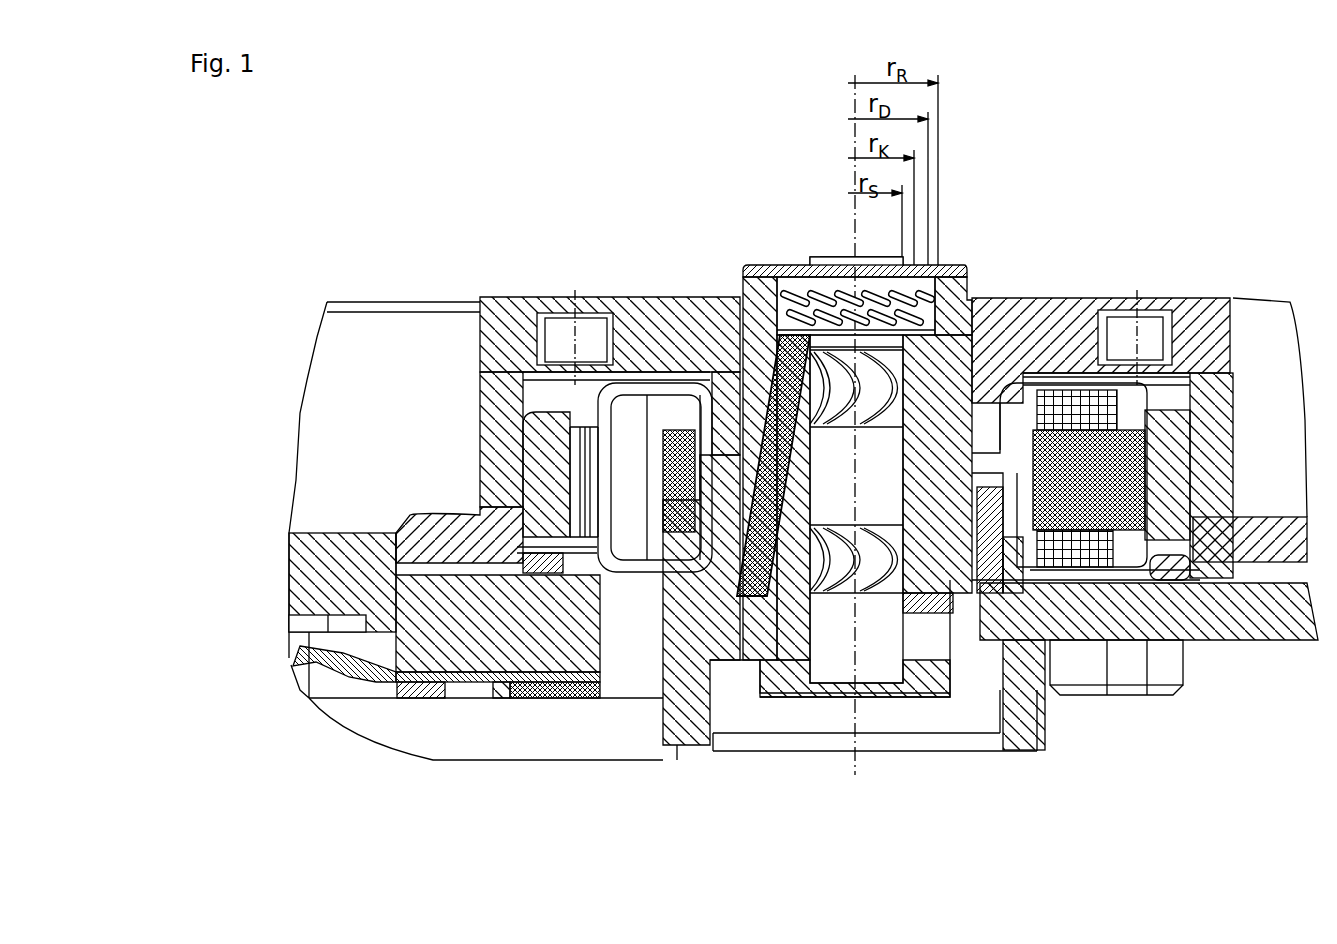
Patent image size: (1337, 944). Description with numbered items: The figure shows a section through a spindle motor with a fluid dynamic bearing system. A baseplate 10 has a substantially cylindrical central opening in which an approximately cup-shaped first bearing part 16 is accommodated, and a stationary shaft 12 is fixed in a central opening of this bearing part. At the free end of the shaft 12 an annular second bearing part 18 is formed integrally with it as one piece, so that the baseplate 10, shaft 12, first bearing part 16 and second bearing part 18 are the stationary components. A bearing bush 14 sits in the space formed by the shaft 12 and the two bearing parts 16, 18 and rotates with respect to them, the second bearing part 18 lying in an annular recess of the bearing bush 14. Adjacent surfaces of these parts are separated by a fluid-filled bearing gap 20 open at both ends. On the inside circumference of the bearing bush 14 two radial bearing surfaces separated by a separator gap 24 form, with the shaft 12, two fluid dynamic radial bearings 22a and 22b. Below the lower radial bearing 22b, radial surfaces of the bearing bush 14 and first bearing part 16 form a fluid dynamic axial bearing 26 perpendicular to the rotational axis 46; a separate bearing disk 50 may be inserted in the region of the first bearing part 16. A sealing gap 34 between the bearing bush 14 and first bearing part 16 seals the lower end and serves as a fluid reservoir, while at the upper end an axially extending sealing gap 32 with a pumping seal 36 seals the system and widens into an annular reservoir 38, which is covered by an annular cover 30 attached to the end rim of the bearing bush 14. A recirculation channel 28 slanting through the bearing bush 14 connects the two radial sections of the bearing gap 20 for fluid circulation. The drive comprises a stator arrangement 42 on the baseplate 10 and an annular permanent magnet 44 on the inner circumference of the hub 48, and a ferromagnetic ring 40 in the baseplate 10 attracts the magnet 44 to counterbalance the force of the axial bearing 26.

The baseplate 10 is at (462, 700).
The shaft 12 is at (817, 262).
The bearing bush 14 is at (727, 383).
The first bearing part 16 is at (790, 655).
The second bearing part 18 is at (950, 350).
The bearing gap 20 is at (1072, 405).
The upper fluid dynamic radial bearing 22a is at (975, 432).
The lower fluid dynamic radial bearing 22b is at (1017, 600).
The separator gap 24 is at (1100, 376).
The fluid dynamic axial bearing 26 is at (984, 620).
The recirculation channel 28 is at (707, 380).
The annular cover 30 is at (795, 266).
The axially extending sealing gap 32 is at (742, 292).
The sealing gap 34 is at (1240, 300).
The pumping seal 36 is at (958, 278).
The annular reservoir 38 is at (760, 272).
The ferromagnetic ring 40 is at (521, 700).
The stator arrangement 42 is at (623, 450).
The annular permanent magnet 44 is at (543, 460).
The rotational axis 46 is at (828, 258).
The hub 48 is at (478, 457).
The bearing disk 50 is at (752, 600).